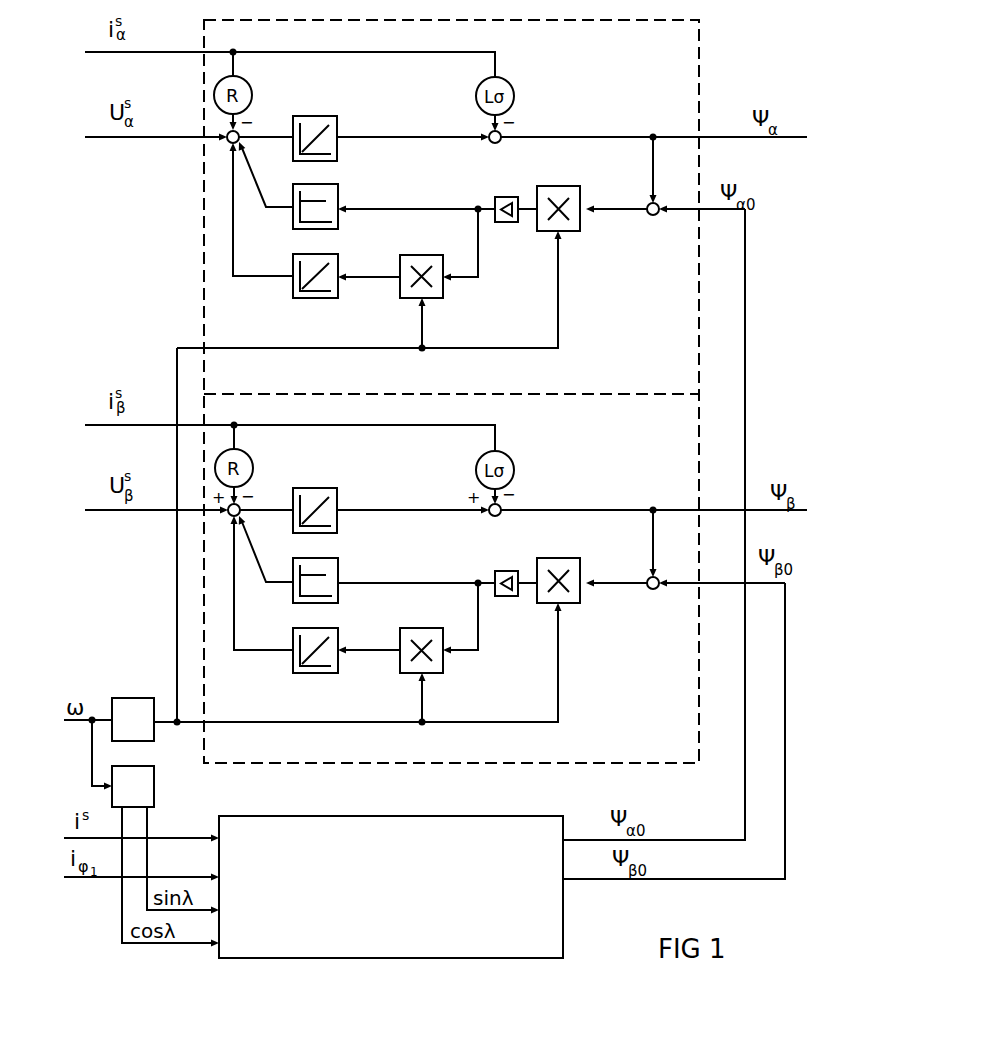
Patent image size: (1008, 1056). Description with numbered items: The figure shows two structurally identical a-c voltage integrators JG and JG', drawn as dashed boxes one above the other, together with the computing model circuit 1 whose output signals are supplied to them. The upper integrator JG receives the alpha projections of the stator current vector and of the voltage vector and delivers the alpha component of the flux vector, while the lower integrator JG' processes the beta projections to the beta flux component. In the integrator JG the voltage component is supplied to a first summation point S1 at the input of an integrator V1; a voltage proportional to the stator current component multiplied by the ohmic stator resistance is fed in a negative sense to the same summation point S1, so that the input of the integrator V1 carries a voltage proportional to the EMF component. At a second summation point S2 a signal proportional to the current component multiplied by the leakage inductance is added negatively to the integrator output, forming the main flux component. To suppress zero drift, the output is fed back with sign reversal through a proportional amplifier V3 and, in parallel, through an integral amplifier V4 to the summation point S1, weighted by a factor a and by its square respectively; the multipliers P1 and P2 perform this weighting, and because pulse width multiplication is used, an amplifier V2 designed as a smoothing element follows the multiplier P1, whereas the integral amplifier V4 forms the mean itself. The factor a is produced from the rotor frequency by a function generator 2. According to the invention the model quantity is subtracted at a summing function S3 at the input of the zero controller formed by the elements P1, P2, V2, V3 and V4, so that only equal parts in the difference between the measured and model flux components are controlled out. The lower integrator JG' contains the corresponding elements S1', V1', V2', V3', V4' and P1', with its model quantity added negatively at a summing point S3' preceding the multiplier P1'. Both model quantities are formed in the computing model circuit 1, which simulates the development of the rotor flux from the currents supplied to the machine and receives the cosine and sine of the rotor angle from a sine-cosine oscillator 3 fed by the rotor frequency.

The computing model circuit 1 is at (512, 959).
The function generator 2 is at (136, 698).
The sine-cosine oscillator 3 is at (154, 784).
The weighting factor a is at (179, 722).
The a-c voltage integrator JG is at (469, 391).
The second a-c voltage integrator JG' is at (471, 418).
The first summation point S1 is at (249, 134).
The second summation point S2 is at (499, 143).
The summing function S3 is at (652, 220).
The integrator V1 is at (334, 128).
The amplifier designed as smoothing element V2 is at (510, 194).
The proportional amplifier V3 is at (334, 199).
The integral amplifier V4 is at (334, 269).
The multiplier P1 is at (574, 195).
The multiplier P2 is at (412, 255).
The first summation point of second integrator S1' is at (253, 500).
The summing point S3' is at (651, 593).
The integrator of second a-c voltage integrator V1' is at (337, 499).
The smoothing amplifier of second a-c voltage integrator V2' is at (507, 604).
The proportional amplifier of second a-c voltage integrator V3' is at (338, 574).
The integral amplifier of second a-c voltage integrator V4' is at (338, 644).
The multiplier of second a-c voltage integrator P1' is at (582, 570).